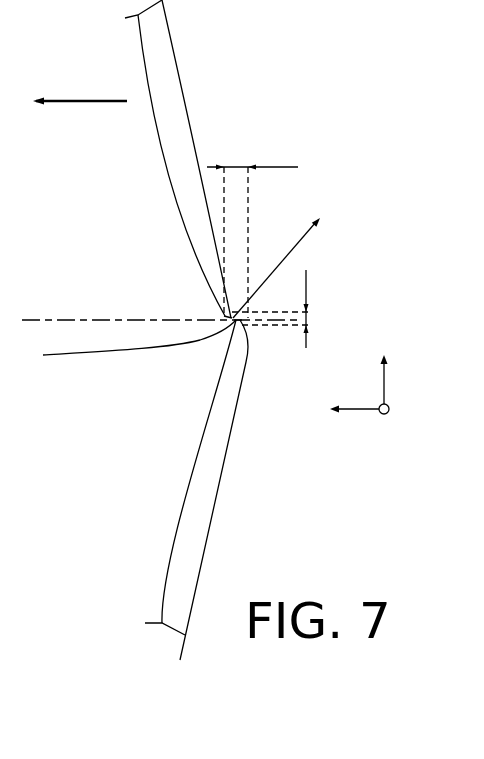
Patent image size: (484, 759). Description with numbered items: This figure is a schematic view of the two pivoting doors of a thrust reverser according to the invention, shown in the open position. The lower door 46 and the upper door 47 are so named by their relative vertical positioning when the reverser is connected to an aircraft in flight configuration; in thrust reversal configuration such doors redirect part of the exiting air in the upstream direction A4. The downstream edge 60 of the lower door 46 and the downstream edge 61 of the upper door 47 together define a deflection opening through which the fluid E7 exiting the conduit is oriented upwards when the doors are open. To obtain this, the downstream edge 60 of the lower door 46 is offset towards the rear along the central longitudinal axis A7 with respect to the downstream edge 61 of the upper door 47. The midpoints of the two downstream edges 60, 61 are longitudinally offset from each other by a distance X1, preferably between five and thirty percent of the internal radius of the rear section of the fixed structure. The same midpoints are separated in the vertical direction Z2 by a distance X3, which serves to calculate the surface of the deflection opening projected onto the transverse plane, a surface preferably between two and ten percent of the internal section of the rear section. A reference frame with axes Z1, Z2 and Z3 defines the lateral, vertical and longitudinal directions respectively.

The upper door 47 is at (188, 110).
The lower door 46 is at (217, 512).
The downstream edge of the lower door 60 is at (238, 324).
The downstream edge of the upper door 61 is at (226, 317).
The upstream direction A4 is at (77, 100).
The central longitudinal axis A7 is at (63, 320).
The fluid exiting the conduit E7 is at (292, 250).
The longitudinal offset distance X1 is at (252, 226).
The vertical separation distance X3 is at (289, 306).
The lateral direction Z1 is at (403, 422).
The vertical direction Z2 is at (405, 369).
The longitudinal direction Z3 is at (348, 429).